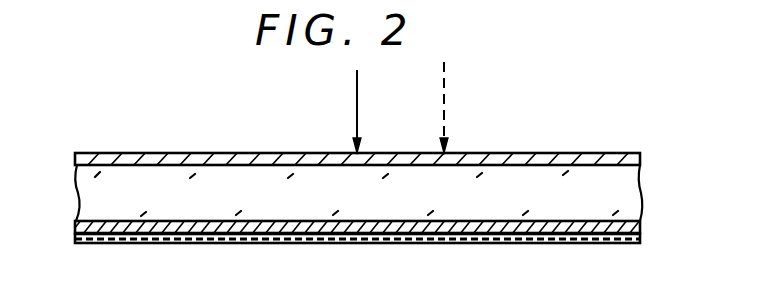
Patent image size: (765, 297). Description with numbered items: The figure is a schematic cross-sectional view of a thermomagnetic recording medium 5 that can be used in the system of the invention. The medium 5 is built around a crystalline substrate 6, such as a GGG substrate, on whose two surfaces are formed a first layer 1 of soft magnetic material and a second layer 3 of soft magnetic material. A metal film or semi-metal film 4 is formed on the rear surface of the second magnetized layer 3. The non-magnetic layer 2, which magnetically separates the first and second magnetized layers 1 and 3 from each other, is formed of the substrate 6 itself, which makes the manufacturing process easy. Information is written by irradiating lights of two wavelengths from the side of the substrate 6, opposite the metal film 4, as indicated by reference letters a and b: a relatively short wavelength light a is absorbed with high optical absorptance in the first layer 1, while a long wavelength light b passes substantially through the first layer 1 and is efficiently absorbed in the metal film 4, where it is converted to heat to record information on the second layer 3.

The first layer of soft magnetic material 1 is at (641, 158).
The non-magnetic layer 2 is at (628, 190).
The substrate 6 is at (389, 193).
The second layer of soft magnetic material 3 is at (641, 230).
The metal film or semi-metal film 4 is at (563, 244).
The thermomagnetic recording medium 5 is at (61, 218).
The light of first wavelength a is at (357, 103).
The light of second wavelength b is at (444, 103).